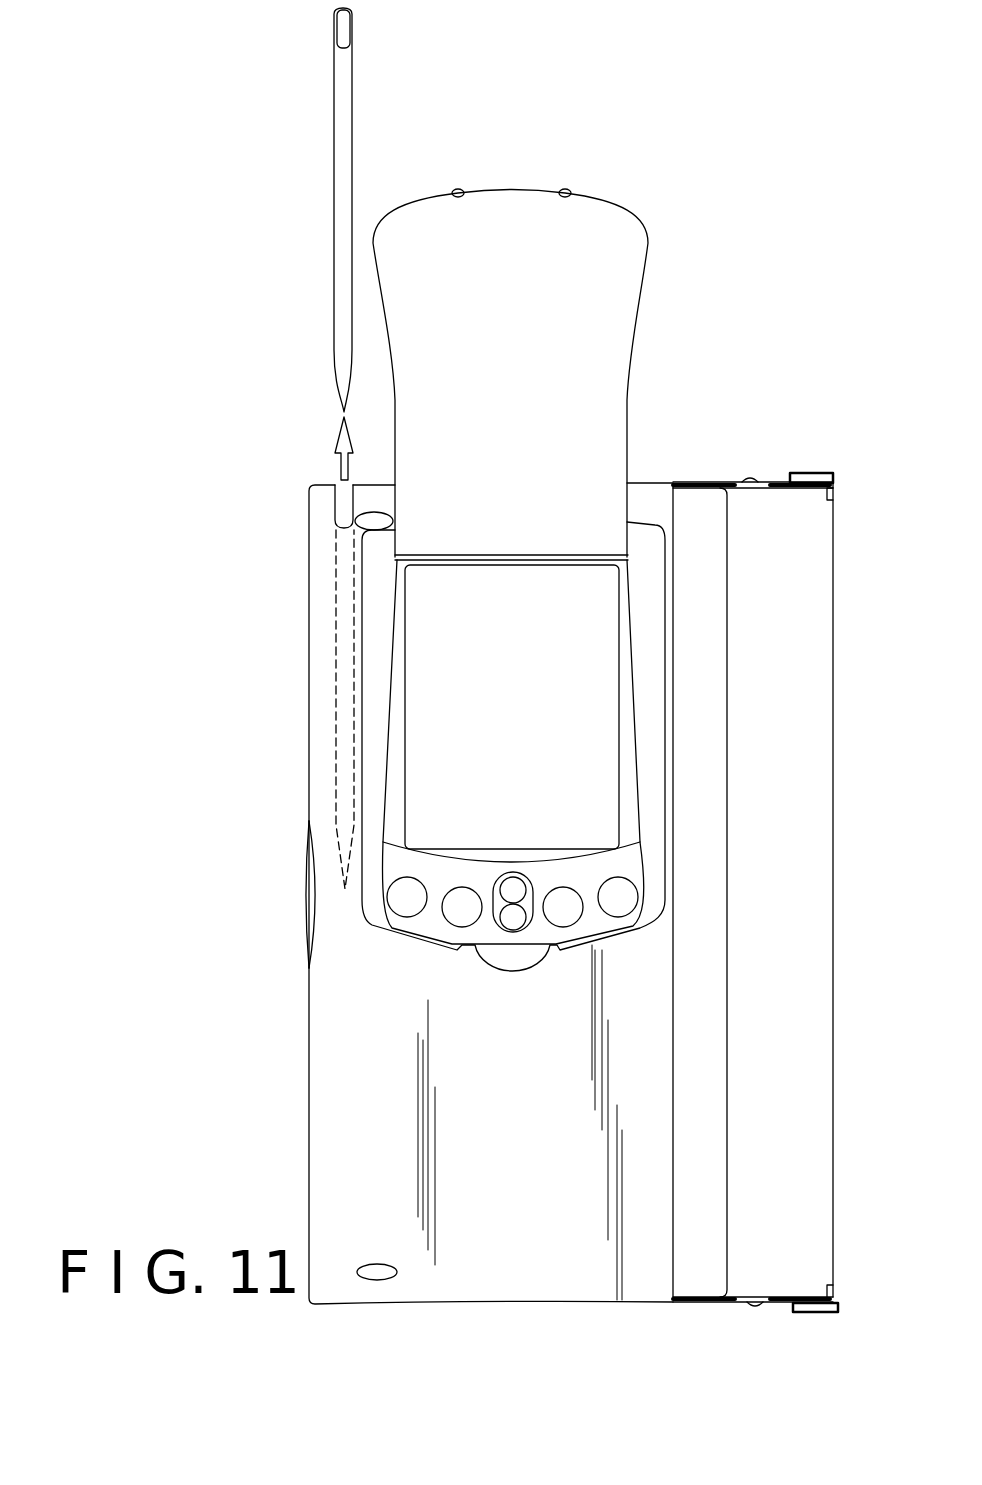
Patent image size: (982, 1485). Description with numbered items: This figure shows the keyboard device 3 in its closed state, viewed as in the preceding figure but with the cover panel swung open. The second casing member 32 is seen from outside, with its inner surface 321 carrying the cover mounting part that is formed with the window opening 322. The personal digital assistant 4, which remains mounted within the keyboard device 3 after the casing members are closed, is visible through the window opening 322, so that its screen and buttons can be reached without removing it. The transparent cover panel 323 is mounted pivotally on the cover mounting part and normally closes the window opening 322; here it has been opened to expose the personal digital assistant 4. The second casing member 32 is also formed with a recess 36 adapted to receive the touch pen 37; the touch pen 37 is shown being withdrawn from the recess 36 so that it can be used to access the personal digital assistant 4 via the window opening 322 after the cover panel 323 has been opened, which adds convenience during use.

The keyboard device 3 is at (538, 750).
The personal digital assistant 4 is at (621, 746).
The second casing member 32 is at (311, 1095).
The recess 36 is at (345, 658).
The touch pen 37 is at (340, 228).
The inner surface 321 is at (395, 1193).
The window opening 322 is at (583, 775).
The transparent cover panel 323 is at (608, 303).